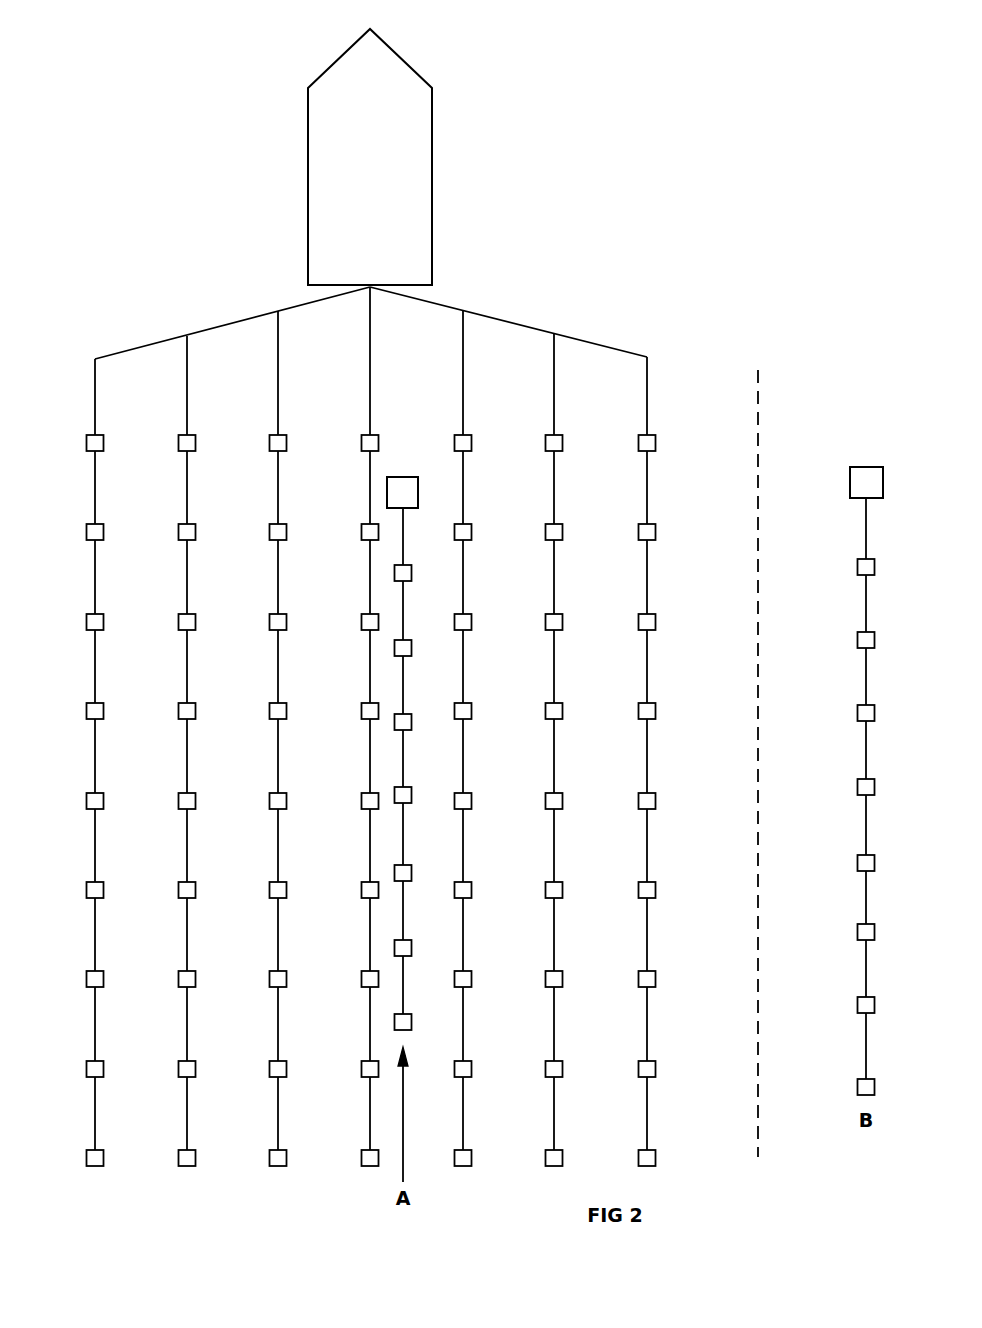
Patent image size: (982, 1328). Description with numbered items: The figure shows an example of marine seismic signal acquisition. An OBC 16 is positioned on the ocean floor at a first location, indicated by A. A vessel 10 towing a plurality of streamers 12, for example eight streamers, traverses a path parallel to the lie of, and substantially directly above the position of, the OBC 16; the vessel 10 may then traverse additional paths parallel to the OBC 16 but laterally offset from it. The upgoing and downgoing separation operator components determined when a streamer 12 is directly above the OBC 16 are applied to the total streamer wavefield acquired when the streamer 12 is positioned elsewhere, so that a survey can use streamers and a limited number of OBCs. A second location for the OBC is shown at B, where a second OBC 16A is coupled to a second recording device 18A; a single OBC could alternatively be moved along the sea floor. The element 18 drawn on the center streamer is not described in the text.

The vessel 10 is at (432, 196).
The streamer 12 is at (95, 478).
The OBC 16 is at (403, 998).
The source / deflector unit 18 is at (418, 491).
The second OBC 16A is at (866, 533).
The second recording device 18A is at (850, 487).